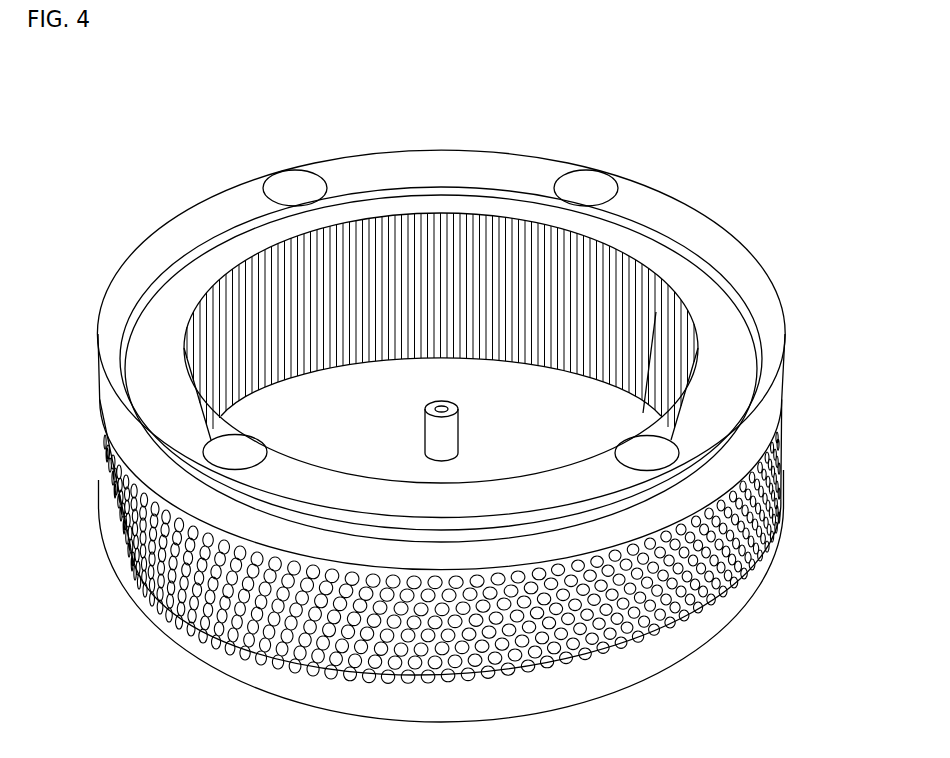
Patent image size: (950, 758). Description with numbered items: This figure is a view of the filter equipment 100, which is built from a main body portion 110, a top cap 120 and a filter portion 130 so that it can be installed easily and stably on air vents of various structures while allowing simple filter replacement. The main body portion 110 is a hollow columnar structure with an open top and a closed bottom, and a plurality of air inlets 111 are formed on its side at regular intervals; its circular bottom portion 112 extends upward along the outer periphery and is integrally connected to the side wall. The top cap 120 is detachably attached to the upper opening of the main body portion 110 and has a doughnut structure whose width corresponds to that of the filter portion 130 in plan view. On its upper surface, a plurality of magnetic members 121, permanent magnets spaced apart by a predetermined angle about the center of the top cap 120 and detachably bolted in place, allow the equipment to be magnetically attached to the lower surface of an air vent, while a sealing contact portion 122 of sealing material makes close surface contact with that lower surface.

The filter equipment 100 is at (463, 128).
The main body portion 110 is at (176, 632).
The air inlets 111 is at (134, 566).
The bottom portion 112 is at (651, 318).
The top cap 120 is at (100, 274).
The magnetic member 121 is at (294, 190).
The sealing contact portion 122 is at (157, 236).
The filter portion 130 is at (639, 235).